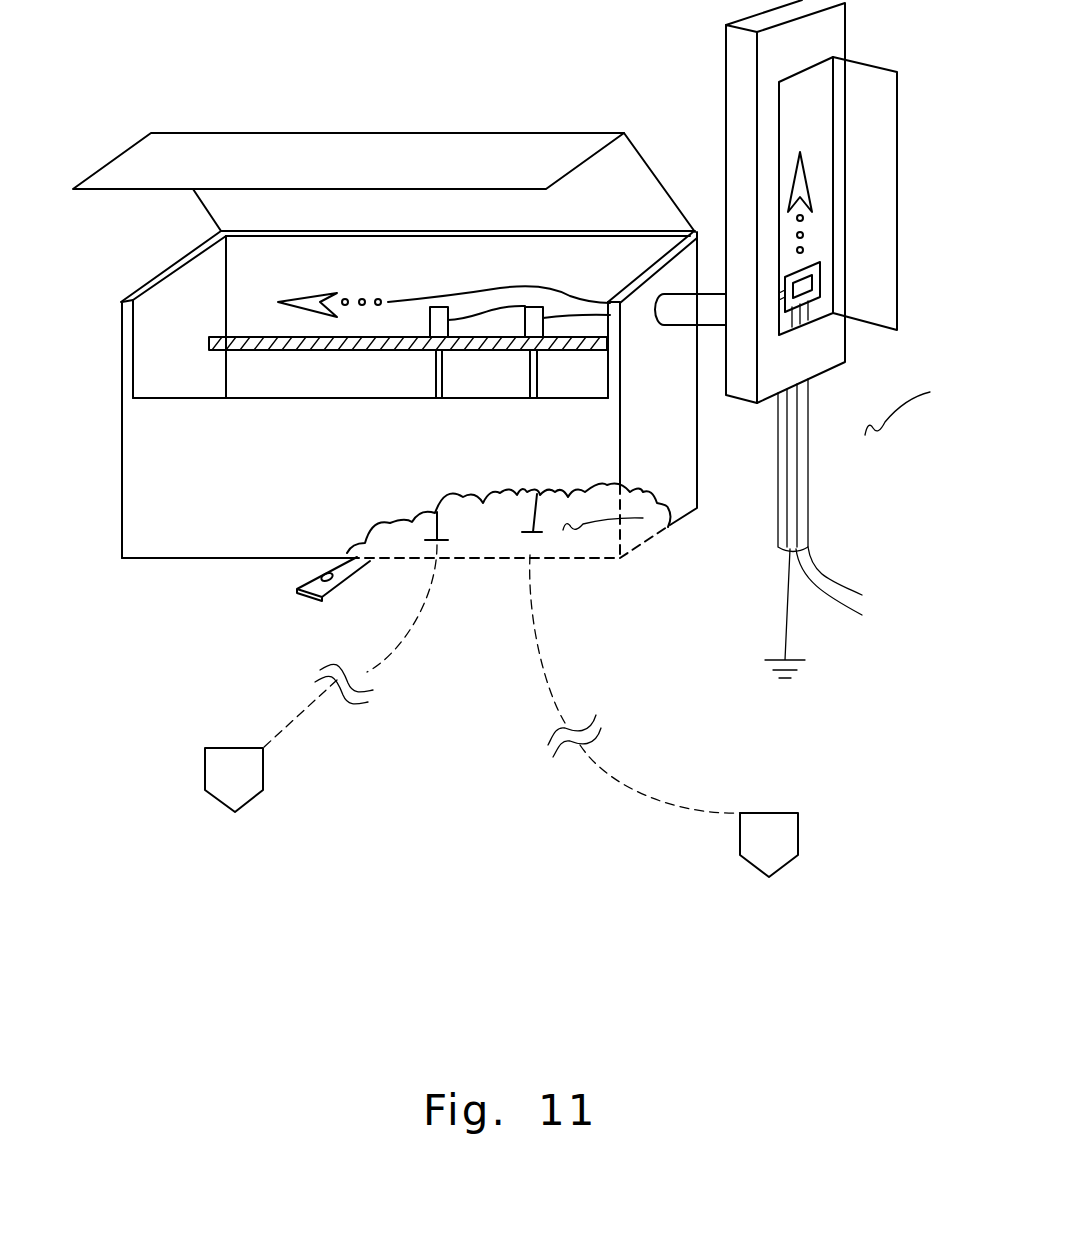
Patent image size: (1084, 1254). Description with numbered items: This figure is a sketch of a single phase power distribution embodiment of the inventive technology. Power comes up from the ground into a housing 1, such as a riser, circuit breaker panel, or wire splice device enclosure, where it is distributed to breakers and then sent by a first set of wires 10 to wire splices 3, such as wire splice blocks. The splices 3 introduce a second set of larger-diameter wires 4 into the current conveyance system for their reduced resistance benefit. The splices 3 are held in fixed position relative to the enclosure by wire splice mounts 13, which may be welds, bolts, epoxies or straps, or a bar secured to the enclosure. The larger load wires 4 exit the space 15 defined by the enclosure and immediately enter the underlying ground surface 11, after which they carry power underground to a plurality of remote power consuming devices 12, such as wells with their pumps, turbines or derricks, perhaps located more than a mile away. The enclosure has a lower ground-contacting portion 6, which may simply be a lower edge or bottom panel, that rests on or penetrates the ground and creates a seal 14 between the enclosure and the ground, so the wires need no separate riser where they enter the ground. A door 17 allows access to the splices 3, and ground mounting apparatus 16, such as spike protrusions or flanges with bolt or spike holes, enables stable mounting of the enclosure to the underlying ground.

The housing 1 is at (828, 350).
The wire splices 3 is at (537, 317).
The second set of wires 4 is at (533, 372).
The ground-contacting portion 6 is at (683, 485).
The first set of wires 10 is at (582, 295).
The underlying ground surface 11 is at (540, 545).
The remote power consuming devices 12 is at (248, 810).
The wire splice mounts 13 is at (283, 343).
The seal 14 is at (246, 558).
The space 15 is at (174, 373).
The ground mounting apparatus 16 is at (153, 538).
The door 17 is at (232, 132).